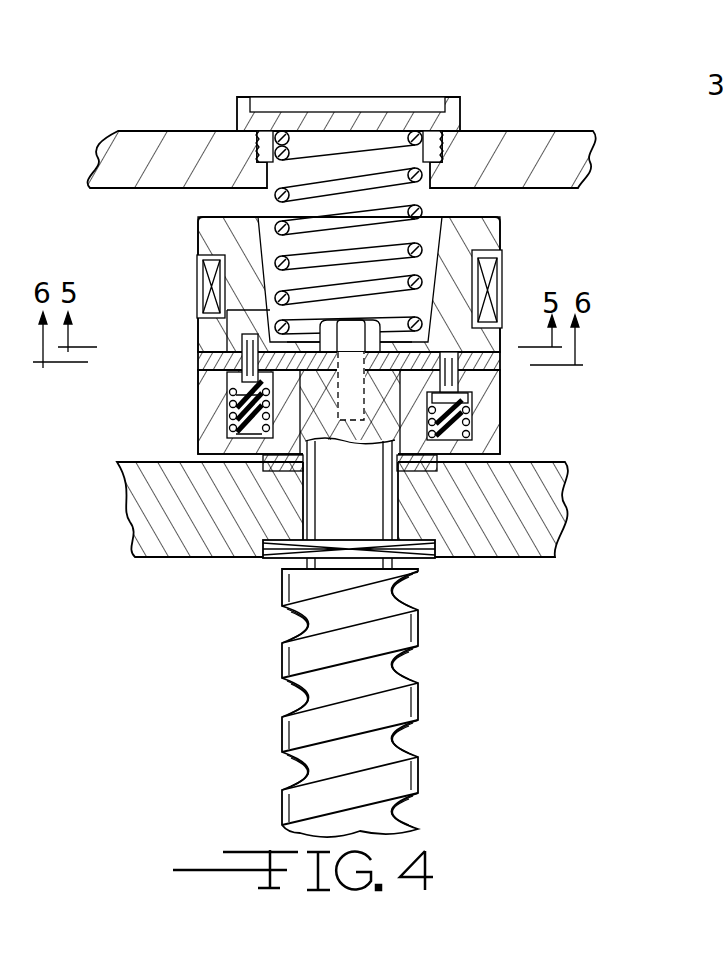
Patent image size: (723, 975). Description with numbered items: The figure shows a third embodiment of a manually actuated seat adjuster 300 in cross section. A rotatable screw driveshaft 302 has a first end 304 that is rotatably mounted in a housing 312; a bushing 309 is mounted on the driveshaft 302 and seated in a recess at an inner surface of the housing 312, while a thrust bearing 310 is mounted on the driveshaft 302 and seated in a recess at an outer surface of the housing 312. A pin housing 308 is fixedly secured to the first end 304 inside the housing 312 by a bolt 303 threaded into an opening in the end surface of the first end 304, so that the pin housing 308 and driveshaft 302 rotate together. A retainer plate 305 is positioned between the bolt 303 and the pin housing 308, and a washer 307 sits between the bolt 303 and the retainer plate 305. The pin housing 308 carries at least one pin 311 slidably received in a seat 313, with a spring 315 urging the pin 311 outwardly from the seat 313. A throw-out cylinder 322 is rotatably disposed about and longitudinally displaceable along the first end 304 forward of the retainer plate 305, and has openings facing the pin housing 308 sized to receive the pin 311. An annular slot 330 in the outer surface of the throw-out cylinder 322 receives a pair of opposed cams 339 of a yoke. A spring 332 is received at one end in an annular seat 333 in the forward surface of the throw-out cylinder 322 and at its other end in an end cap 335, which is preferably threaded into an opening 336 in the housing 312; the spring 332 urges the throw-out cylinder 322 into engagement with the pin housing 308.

The seat adjuster 300 is at (216, 610).
The screw driveshaft 302 is at (430, 617).
The bolt 303 is at (353, 330).
The first end 304 is at (225, 402).
The retainer plate 305 is at (198, 363).
The washer 307 is at (300, 330).
The pin housing 308 is at (512, 377).
The bushing 309 is at (400, 470).
The thrust bearing 310 is at (420, 566).
The pin 311 is at (243, 340).
The housing 312 is at (139, 118).
The seat 313 is at (450, 443).
The spring 315 is at (227, 432).
The throw-out cylinder 322 is at (503, 228).
The annular slot 330 is at (200, 240).
The spring 332 is at (437, 140).
The annular seat 333 is at (272, 225).
The end cap 335 is at (281, 110).
The opening 336 is at (260, 150).
The cams 339 is at (200, 276).